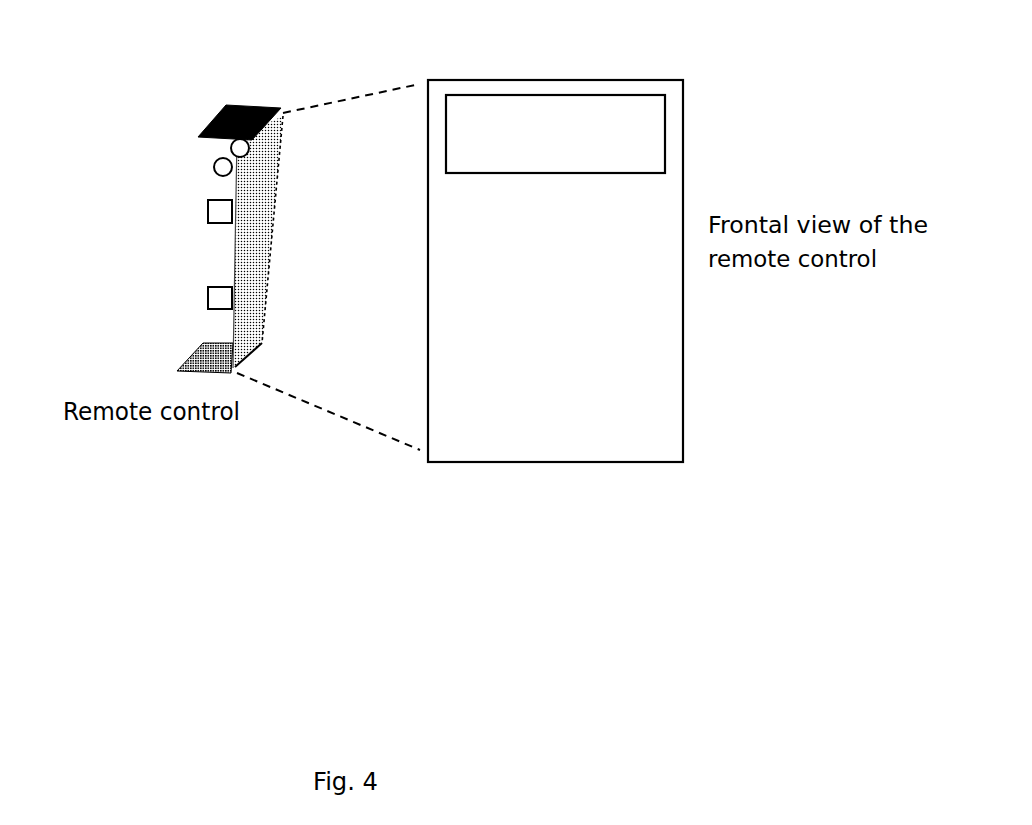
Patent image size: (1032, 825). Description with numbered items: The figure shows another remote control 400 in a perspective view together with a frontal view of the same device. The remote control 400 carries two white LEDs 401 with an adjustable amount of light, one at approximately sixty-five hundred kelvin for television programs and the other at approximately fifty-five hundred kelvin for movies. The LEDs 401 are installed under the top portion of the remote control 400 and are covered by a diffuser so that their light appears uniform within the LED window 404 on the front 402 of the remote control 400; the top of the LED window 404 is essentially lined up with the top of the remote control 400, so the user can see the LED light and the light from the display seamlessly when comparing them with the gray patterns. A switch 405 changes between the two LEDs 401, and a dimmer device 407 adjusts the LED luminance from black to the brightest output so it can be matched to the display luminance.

The remote control 400 is at (114, 198).
The white LEDs 401 is at (233, 133).
The front of the remote control 402 is at (253, 222).
The LED window 404 is at (662, 158).
The switch 405 is at (206, 288).
The dimmer device 407 is at (208, 201).